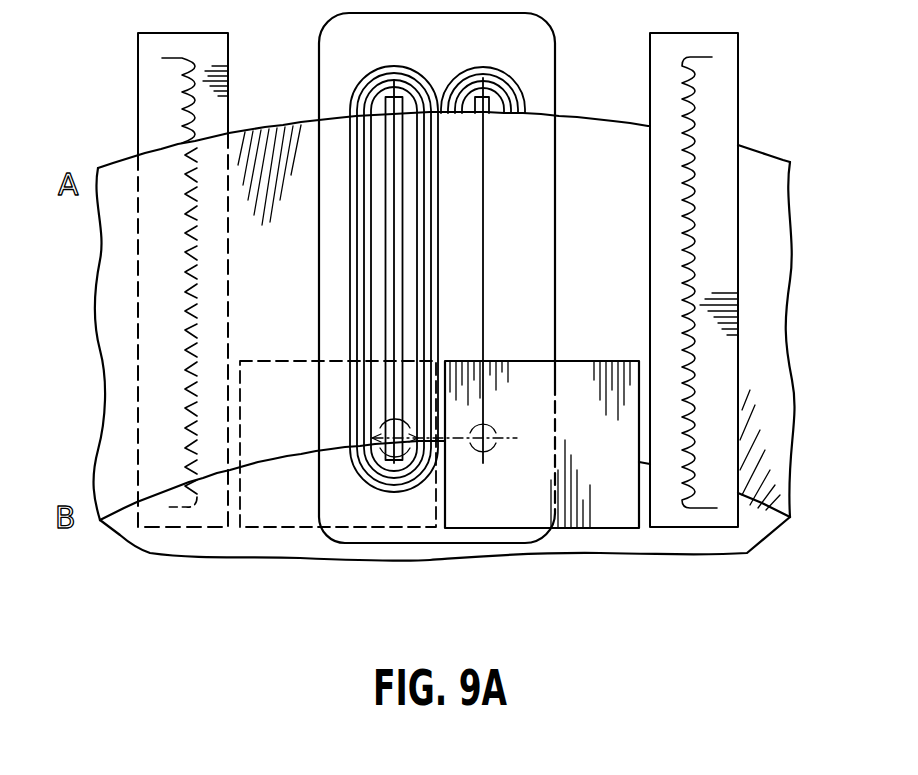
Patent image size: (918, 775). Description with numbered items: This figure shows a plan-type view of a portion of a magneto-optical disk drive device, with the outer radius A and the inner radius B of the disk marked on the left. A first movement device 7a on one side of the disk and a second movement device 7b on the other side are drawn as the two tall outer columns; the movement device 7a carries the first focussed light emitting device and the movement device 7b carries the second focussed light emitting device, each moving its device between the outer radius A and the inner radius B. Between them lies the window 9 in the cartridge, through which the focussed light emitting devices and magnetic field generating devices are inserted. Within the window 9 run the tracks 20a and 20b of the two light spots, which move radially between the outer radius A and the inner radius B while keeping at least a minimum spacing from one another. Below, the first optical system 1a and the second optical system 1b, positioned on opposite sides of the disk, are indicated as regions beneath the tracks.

The movement device 7a is at (138, 100).
The movement device 7b is at (738, 100).
The track of the light spot 20a is at (393, 229).
The track of the light spot 20b is at (484, 308).
The first optical system 1a is at (288, 532).
The second optical system 1b is at (612, 528).
The window 9 is at (471, 543).